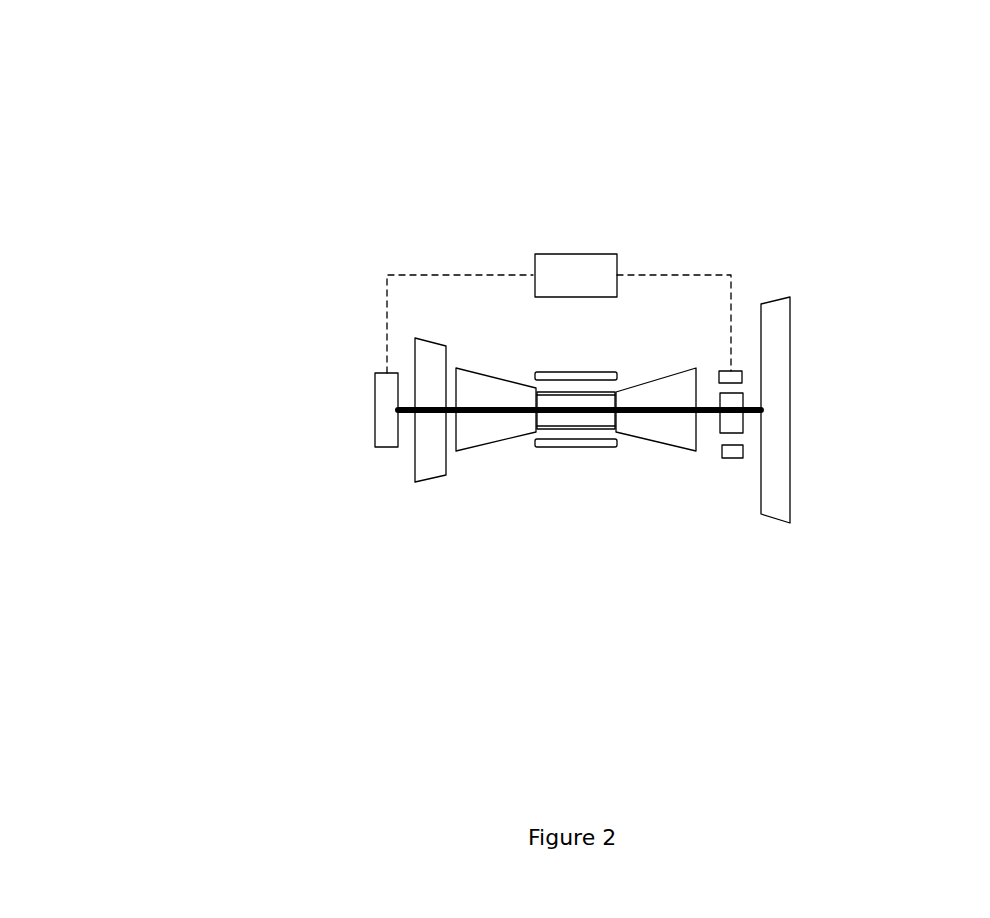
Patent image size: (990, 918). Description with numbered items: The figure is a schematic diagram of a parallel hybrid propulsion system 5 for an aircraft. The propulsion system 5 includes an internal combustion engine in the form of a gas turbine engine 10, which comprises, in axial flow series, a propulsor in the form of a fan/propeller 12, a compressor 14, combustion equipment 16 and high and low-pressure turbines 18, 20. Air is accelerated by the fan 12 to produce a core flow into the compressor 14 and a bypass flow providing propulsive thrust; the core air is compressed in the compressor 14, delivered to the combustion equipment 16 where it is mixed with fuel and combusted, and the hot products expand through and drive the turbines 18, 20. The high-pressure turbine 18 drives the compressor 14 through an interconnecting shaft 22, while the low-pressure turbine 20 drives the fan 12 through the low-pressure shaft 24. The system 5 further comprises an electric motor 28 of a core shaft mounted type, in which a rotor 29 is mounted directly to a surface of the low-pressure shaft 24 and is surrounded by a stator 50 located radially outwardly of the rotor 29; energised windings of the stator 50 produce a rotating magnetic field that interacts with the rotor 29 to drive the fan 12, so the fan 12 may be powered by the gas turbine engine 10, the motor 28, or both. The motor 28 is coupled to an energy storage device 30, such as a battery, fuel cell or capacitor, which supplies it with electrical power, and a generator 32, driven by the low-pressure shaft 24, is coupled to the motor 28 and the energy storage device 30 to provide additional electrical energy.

The propulsion system 5 is at (240, 345).
The gas turbine engine 10 is at (499, 328).
The fan/propeller 12 is at (790, 328).
The compressor 14 is at (647, 440).
The combustion equipment 16 is at (595, 448).
The high-pressure turbine 18 is at (470, 450).
The low-pressure turbine 20 is at (430, 480).
The interconnecting shaft 22 is at (542, 448).
The low-pressure shaft 24 is at (660, 407).
The electric motor 28 is at (734, 492).
The rotor 29 is at (727, 393).
The energy storage device 30 is at (617, 275).
The generator 32 is at (388, 447).
The stator 50 is at (743, 450).